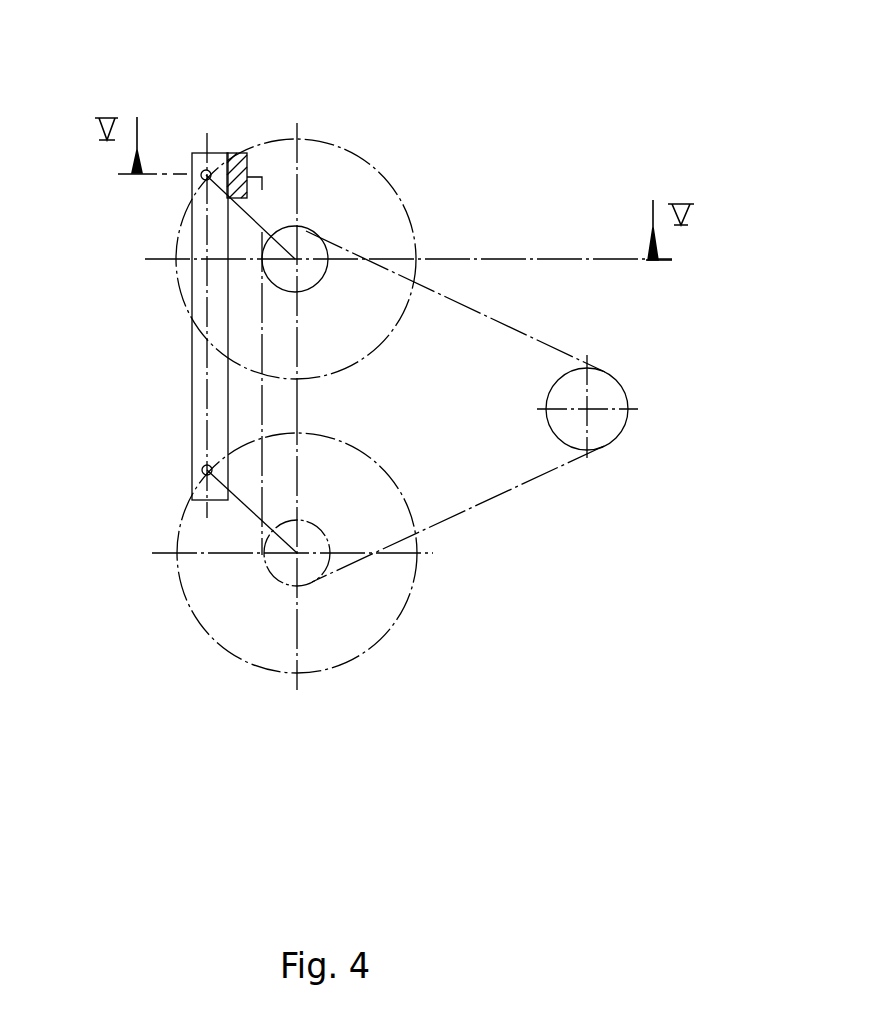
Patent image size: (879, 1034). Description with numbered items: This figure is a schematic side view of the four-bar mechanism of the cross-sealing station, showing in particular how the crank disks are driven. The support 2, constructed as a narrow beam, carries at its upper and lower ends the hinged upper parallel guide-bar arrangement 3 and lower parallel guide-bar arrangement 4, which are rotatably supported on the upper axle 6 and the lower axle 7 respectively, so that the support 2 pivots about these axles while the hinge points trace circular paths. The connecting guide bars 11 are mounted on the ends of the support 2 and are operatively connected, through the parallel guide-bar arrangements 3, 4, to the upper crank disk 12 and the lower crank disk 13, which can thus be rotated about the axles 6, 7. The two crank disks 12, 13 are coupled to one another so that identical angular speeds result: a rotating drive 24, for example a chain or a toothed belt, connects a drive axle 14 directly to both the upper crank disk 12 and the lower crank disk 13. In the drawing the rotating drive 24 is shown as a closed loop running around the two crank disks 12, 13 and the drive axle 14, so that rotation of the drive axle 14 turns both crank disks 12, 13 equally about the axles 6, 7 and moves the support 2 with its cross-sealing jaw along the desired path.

The support 2 is at (243, 150).
The upper parallel guide-bar arrangement 3 is at (263, 213).
The lower parallel guide-bar arrangement 4 is at (250, 518).
The upper axle 6 is at (320, 233).
The lower axle 7 is at (327, 567).
The connecting guide bars 11 is at (200, 410).
The upper crank disk 12 is at (295, 259).
The lower crank disk 13 is at (262, 565).
The drive axle 14 is at (622, 385).
The rotating drive 24 is at (482, 307).